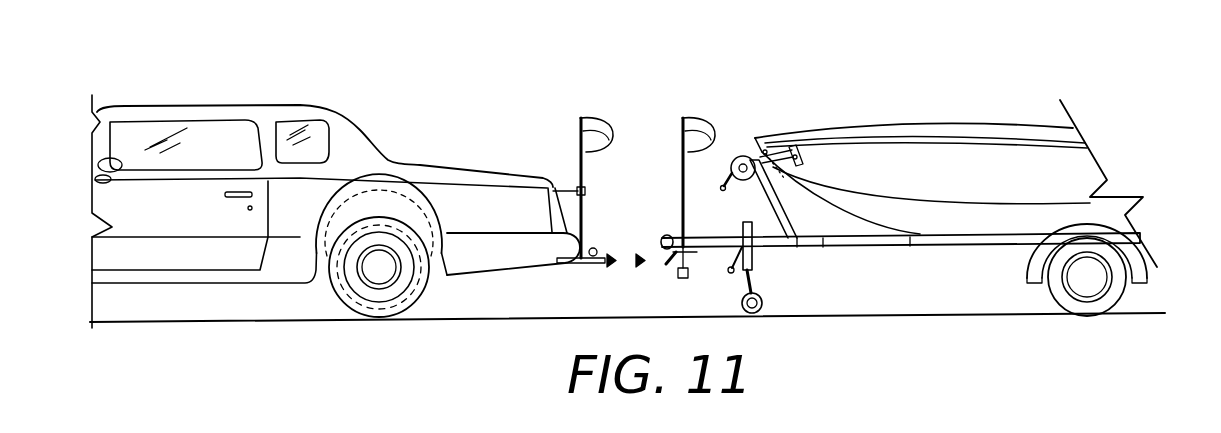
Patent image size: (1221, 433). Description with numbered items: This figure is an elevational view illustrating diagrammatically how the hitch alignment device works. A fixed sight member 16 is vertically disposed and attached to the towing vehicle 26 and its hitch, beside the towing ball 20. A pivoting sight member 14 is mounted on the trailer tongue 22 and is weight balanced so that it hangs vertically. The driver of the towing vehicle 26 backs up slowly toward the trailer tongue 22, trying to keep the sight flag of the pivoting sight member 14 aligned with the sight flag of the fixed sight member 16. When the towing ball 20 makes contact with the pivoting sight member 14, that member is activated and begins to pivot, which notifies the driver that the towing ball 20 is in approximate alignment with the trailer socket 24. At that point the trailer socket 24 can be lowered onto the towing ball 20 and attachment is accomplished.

The pivoting sight member 14 is at (698, 156).
The fixed sight member 16 is at (585, 170).
The towing ball 20 is at (596, 250).
The trailer tongue 22 is at (714, 247).
The trailer socket 24 is at (658, 272).
The towing vehicle 26 is at (433, 126).